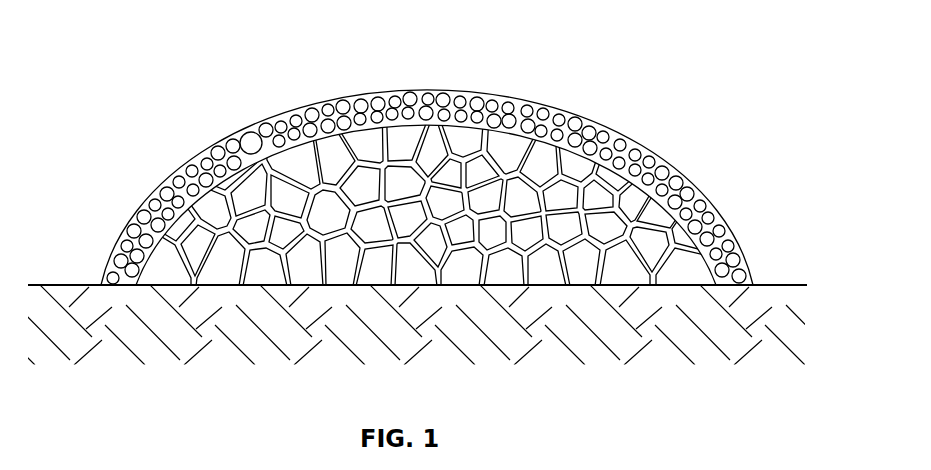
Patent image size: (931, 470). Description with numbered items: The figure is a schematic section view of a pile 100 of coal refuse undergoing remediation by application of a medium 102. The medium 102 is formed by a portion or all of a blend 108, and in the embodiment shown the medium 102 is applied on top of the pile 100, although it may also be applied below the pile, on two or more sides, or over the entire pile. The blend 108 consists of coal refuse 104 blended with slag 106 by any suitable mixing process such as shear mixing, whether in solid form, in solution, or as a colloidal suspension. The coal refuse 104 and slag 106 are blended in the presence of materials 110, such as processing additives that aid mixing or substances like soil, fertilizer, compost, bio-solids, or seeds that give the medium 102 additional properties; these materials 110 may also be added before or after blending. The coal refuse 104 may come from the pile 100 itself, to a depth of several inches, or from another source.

The pile 100 is at (613, 85).
The medium 102 is at (447, 188).
The coal refuse 104 is at (248, 142).
The slag 106 is at (327, 198).
The blend 108 is at (163, 177).
The materials 110 is at (694, 212).